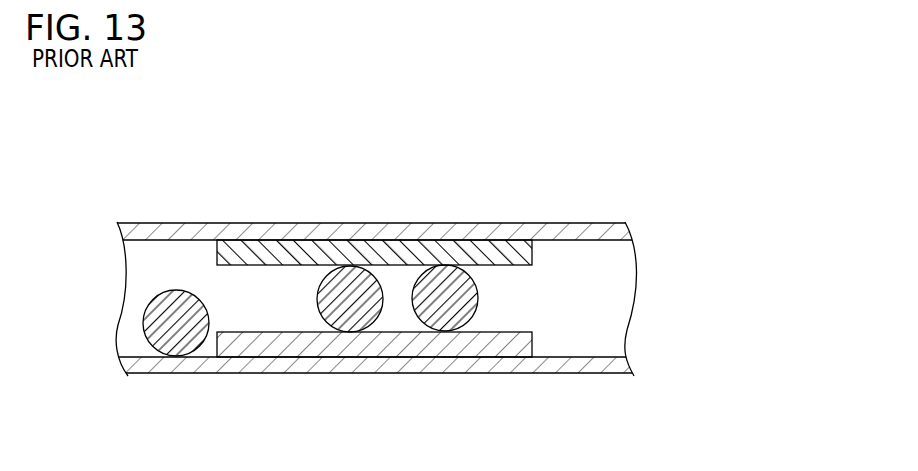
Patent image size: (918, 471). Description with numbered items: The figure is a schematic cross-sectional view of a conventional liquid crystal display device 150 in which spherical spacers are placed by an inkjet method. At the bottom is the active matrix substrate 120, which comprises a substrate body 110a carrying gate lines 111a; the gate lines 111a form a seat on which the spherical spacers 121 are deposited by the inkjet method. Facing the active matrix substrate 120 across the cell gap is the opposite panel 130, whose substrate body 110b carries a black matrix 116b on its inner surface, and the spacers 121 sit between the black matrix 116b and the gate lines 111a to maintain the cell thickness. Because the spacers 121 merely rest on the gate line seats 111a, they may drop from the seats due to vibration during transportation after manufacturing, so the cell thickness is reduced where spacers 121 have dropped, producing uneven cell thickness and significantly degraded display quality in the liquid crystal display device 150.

The liquid crystal display device 150 is at (165, 178).
The upper panel 130 is at (743, 210).
The upper substrate 110b is at (612, 232).
The black matrix 116b is at (518, 256).
The active matrix substrate 120 is at (743, 328).
The gate lines 111a is at (520, 337).
The substrate body 110a is at (610, 363).
The spherical spacers 121 is at (347, 307).